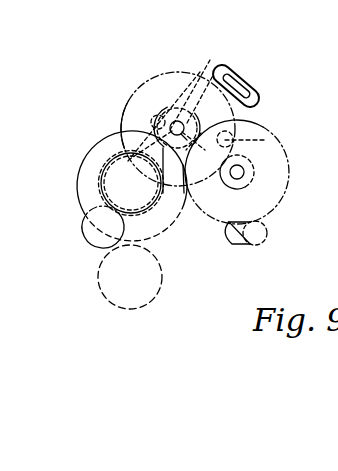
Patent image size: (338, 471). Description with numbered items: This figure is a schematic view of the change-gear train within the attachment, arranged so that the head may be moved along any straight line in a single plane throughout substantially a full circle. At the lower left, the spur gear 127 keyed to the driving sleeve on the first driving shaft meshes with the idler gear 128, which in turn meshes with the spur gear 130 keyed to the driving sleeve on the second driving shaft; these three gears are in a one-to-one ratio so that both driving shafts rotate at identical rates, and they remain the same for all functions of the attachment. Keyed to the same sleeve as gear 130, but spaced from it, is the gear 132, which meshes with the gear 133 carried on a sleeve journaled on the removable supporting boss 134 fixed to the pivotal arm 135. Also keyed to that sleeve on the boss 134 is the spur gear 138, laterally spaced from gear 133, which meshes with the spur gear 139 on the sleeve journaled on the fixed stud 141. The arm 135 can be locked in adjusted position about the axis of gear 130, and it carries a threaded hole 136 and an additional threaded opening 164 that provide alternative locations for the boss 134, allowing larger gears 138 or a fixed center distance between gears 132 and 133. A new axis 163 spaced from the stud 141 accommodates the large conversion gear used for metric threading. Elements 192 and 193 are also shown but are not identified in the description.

The spur gear 127 is at (104, 300).
The idler gear 128 is at (93, 252).
The spur gear 130 is at (92, 203).
The gear 132 is at (77, 183).
The gear 133 is at (177, 108).
The supporting boss 134 is at (186, 148).
The arm 135 is at (257, 98).
The threaded hole 136 is at (210, 88).
The spur gear 138 is at (197, 70).
The spur gear 139 is at (250, 164).
The fixed stud 141 is at (242, 175).
The new axis 163 is at (232, 141).
The additional threaded opening 164 is at (151, 113).
The bracket 192 is at (229, 223).
The roller 193 is at (241, 242).